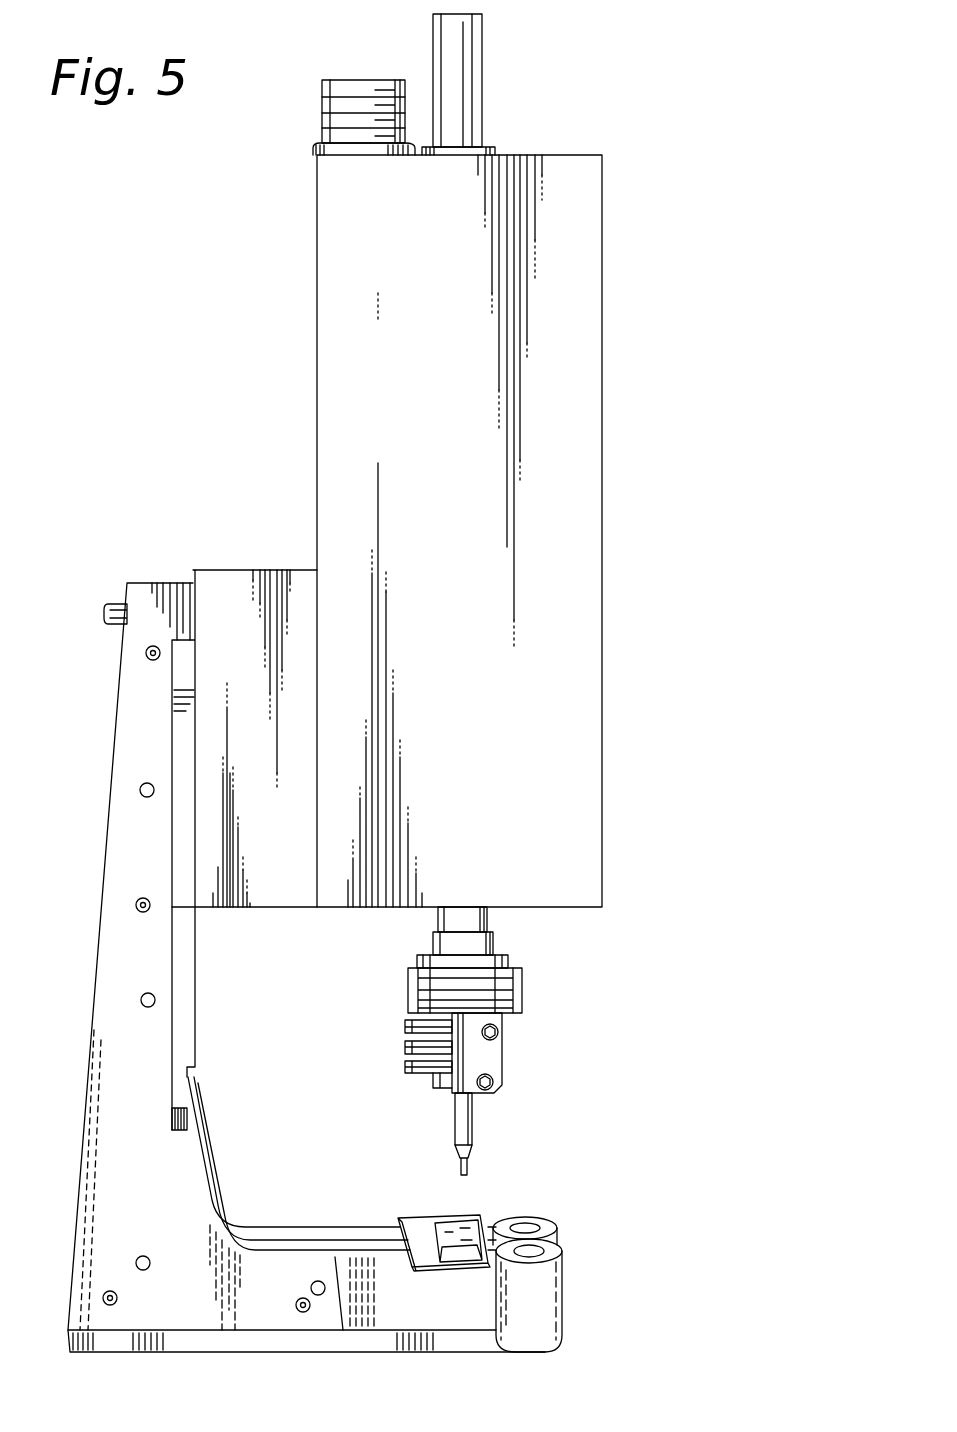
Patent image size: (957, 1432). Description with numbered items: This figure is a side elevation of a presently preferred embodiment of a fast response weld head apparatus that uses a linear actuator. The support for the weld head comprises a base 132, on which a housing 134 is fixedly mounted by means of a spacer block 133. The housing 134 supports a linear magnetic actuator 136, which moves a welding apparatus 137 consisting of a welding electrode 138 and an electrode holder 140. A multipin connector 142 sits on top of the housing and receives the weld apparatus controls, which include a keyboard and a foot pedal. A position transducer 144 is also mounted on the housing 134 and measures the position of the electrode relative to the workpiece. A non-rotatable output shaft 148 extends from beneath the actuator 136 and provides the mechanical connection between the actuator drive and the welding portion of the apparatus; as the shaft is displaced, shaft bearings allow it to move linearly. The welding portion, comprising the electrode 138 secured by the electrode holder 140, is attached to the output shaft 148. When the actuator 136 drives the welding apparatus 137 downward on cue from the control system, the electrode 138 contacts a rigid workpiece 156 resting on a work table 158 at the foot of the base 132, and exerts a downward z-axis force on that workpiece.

The base 132 is at (600, 1257).
The spacer block 133 is at (218, 570).
The housing 134 is at (266, 355).
The linear magnetic actuator 136 is at (603, 385).
The welding apparatus 137 is at (550, 991).
The welding electrode 138 is at (473, 1126).
The electrode holder 140 is at (502, 1050).
The multipin connector 142 is at (322, 105).
The position transducer 144 is at (482, 74).
The output shaft 148 is at (488, 918).
The workpiece 156 is at (452, 1228).
The work table 158 is at (410, 1228).